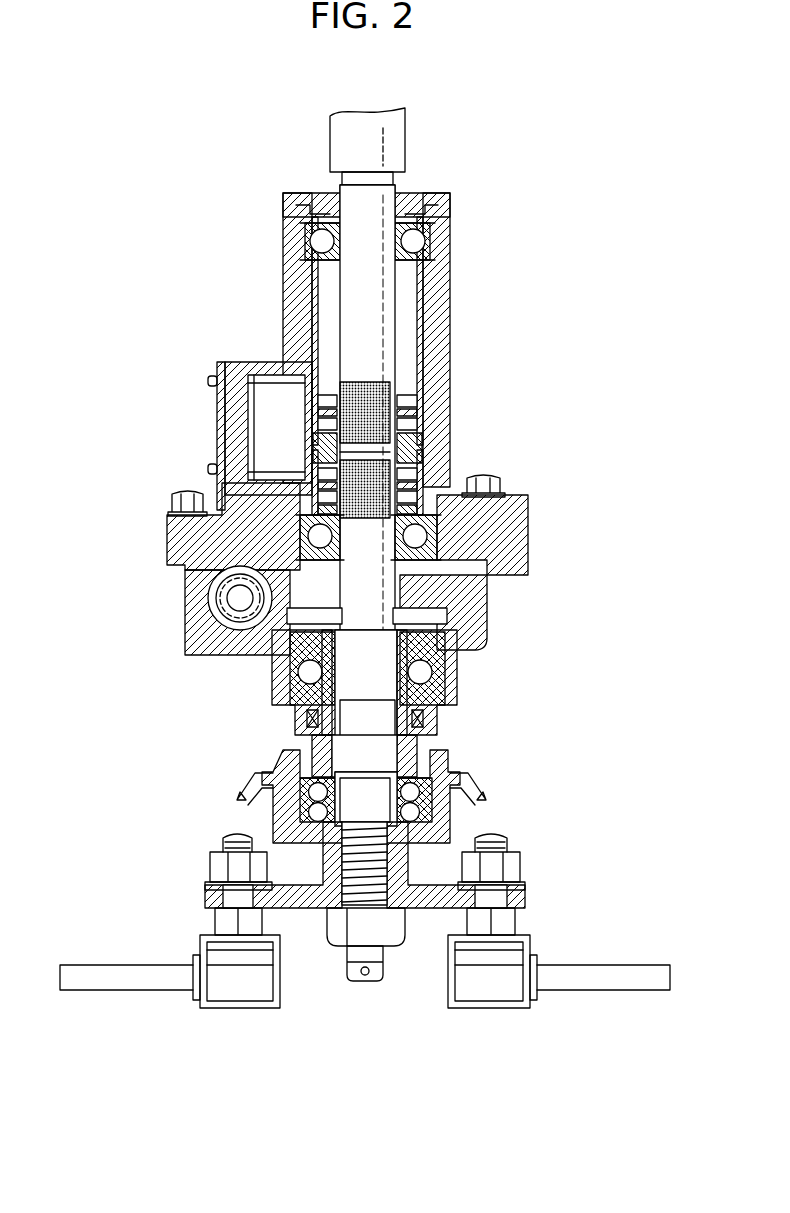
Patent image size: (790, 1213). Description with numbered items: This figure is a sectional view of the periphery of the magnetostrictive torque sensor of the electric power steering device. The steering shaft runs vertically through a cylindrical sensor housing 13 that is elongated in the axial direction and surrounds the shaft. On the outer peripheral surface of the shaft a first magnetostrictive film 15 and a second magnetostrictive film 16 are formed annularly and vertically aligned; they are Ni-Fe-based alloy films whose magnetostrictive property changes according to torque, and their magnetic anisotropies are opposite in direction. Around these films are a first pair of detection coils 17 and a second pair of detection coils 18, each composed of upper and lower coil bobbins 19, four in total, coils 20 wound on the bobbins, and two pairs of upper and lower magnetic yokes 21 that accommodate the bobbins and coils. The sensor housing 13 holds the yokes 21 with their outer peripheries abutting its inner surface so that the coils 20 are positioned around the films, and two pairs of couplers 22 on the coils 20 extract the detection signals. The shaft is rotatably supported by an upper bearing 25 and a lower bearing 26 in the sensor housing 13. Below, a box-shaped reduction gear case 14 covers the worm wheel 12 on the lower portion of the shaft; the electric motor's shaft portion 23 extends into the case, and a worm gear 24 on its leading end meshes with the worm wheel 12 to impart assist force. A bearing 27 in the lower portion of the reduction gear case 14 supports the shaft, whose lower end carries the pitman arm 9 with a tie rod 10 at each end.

The pitman arm 9 is at (313, 908).
The tie rod 10 is at (102, 967).
The worm wheel 12 is at (482, 640).
The sensor housing 13 is at (283, 243).
The reduction gear case 14 is at (183, 608).
The first magnetostrictive film 15 is at (367, 385).
The second magnetostrictive film 16 is at (305, 535).
The first pair of detection coils 17 is at (427, 404).
The second pair of detection coils 18 is at (428, 473).
The coil bobbins 19 is at (420, 390).
The coils 20 is at (320, 395).
The magnetic yokes 21 is at (420, 425).
The couplers 22 is at (318, 413).
The shaft portion 23 is at (240, 598).
The worm gear 24 is at (240, 622).
The bearing 25 is at (428, 240).
The bearing 26 is at (412, 555).
The bearing 27 is at (422, 672).